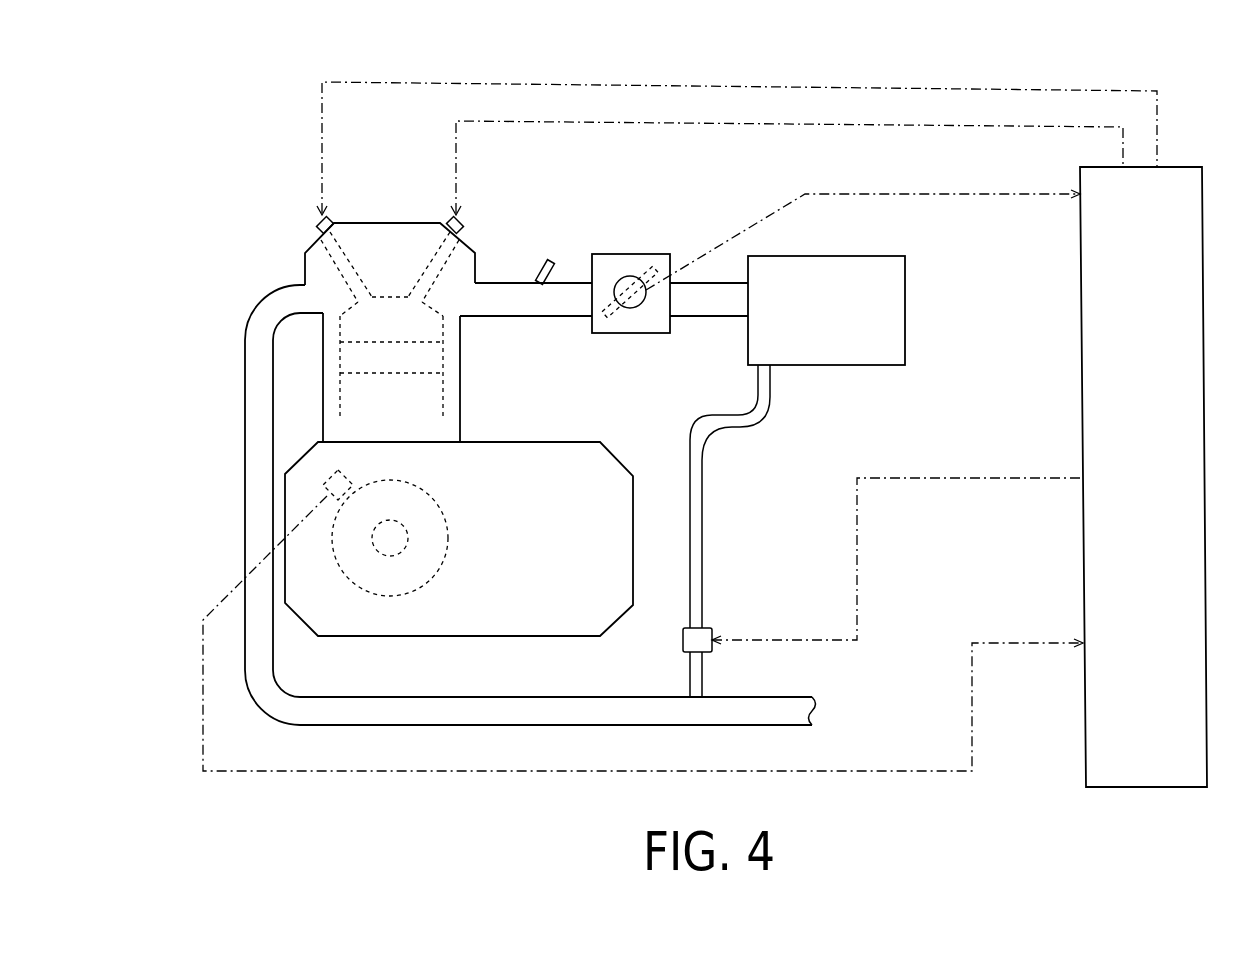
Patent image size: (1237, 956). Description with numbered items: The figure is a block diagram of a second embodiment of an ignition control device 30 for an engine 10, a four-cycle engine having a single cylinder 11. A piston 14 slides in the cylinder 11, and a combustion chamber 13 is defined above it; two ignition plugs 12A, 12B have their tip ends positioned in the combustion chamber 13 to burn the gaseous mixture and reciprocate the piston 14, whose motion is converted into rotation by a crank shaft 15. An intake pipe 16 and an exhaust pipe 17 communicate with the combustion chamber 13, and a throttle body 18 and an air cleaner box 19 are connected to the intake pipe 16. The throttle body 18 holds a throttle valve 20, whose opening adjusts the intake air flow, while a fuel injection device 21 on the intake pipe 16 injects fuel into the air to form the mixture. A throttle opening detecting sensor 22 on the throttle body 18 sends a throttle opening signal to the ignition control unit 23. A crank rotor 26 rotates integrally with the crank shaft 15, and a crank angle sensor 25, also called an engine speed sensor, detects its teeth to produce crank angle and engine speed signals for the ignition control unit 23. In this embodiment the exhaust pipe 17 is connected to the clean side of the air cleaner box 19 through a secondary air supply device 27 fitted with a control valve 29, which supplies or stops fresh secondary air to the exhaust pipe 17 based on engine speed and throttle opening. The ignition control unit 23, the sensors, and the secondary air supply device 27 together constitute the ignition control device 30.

The engine 10 is at (388, 220).
The cylinder 11 is at (340, 402).
The ignition plug 12A is at (318, 226).
The ignition plug 12B is at (463, 228).
The combustion chamber 13 is at (357, 333).
The piston 14 is at (340, 365).
The crank shaft 15 is at (386, 558).
The intake pipe 16 is at (497, 318).
The exhaust pipe 17 is at (260, 300).
The throttle body 18 is at (660, 335).
The air cleaner box 19 is at (848, 256).
The throttle valve 20 is at (640, 275).
The fuel injection device 21 is at (548, 260).
The throttle opening detecting sensor 22 is at (632, 308).
The ignition control unit 23 is at (1175, 167).
The crank angle sensor 25 is at (328, 478).
The crank rotor 26 is at (407, 597).
The secondary air supply device 27 is at (714, 509).
The control valve 29 is at (710, 628).
The ignition control device 30 is at (738, 70).